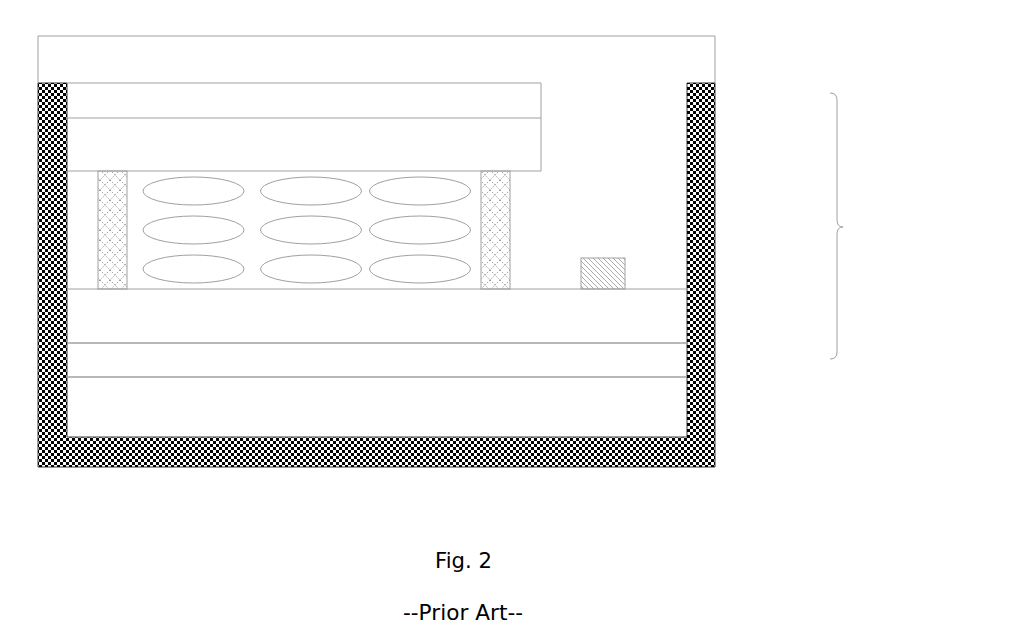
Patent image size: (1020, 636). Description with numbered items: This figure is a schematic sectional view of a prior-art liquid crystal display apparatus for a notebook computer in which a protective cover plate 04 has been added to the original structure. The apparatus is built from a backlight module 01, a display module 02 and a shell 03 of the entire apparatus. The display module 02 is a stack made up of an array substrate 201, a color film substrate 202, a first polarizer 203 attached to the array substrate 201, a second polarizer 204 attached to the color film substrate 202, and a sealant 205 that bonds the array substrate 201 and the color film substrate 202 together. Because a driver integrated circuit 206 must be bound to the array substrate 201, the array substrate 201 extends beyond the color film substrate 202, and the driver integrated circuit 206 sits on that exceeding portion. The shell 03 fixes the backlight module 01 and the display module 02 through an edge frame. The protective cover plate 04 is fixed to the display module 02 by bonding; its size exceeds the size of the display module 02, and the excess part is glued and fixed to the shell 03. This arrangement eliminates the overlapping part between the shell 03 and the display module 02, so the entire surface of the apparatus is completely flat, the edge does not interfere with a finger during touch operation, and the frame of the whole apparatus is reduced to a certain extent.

The backlight module 01 is at (658, 407).
The display module 02 is at (858, 226).
The shell 03 is at (625, 467).
The protective cover plate 04 is at (657, 60).
The array substrate 201 is at (658, 318).
The color film substrate 202 is at (509, 142).
The first polarizer 203 is at (658, 359).
The second polarizer 204 is at (509, 99).
The sealant 205 is at (510, 216).
The driver integrated circuit 206 is at (625, 273).